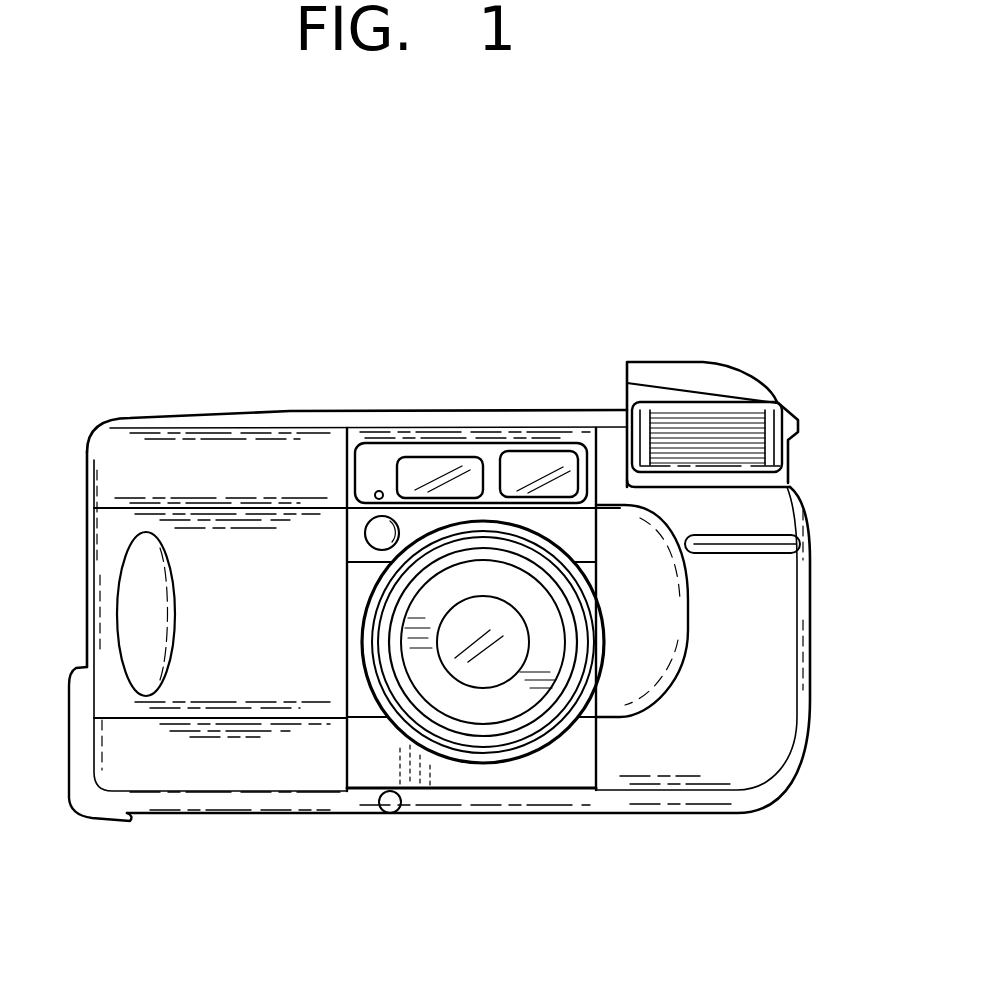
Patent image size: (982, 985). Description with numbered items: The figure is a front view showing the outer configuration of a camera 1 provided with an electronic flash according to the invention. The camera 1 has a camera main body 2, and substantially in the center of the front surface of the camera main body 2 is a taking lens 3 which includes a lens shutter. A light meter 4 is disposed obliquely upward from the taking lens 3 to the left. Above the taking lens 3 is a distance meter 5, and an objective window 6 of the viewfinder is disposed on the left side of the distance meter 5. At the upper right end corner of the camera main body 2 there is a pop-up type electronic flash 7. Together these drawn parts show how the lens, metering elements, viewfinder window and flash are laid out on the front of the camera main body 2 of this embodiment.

The camera 1 is at (703, 341).
The camera main body 2 is at (812, 607).
The taking lens 3 is at (480, 672).
The light meter 4 is at (373, 537).
The distance meter 5 is at (440, 465).
The objective window 6 is at (536, 463).
The electronic flash 7 is at (660, 360).